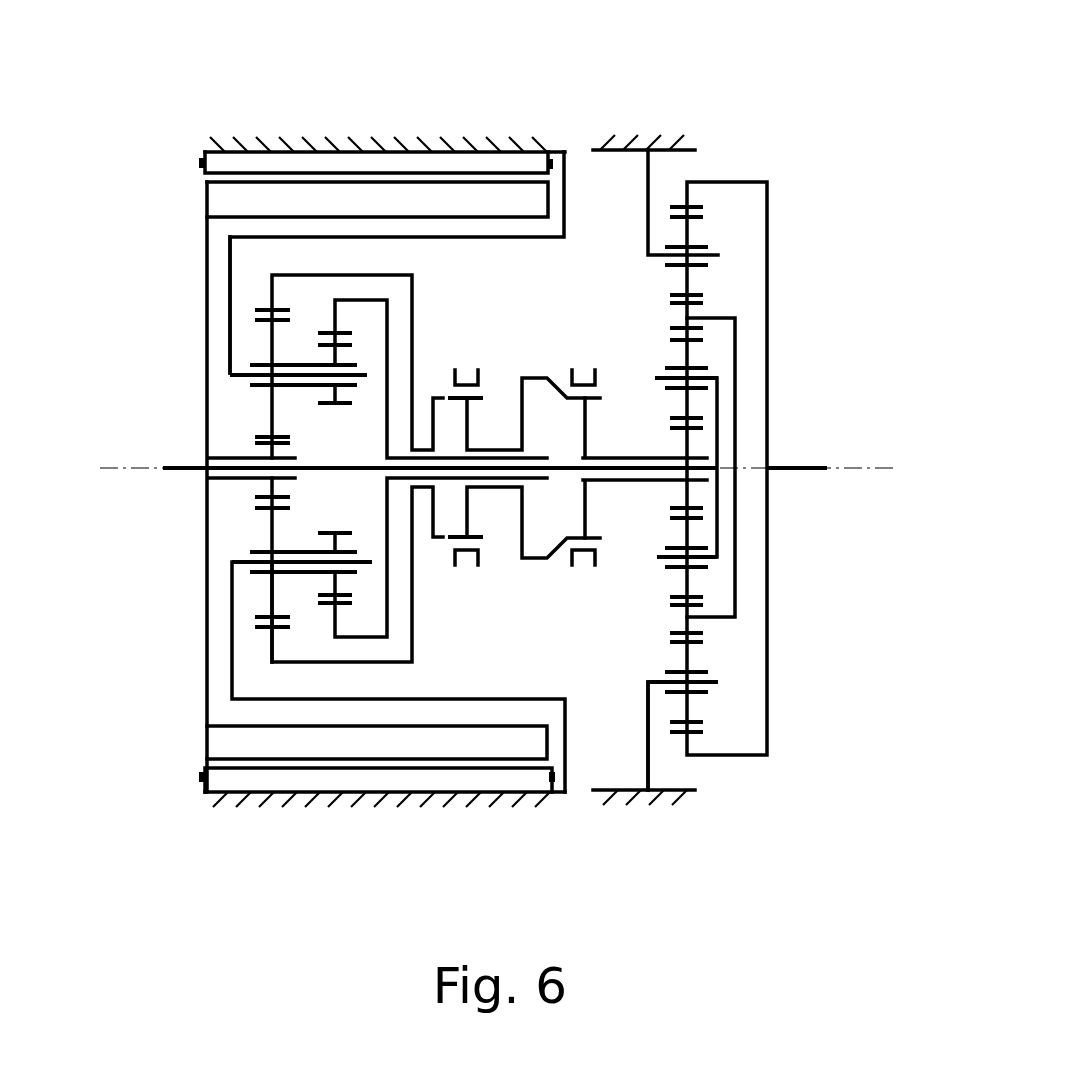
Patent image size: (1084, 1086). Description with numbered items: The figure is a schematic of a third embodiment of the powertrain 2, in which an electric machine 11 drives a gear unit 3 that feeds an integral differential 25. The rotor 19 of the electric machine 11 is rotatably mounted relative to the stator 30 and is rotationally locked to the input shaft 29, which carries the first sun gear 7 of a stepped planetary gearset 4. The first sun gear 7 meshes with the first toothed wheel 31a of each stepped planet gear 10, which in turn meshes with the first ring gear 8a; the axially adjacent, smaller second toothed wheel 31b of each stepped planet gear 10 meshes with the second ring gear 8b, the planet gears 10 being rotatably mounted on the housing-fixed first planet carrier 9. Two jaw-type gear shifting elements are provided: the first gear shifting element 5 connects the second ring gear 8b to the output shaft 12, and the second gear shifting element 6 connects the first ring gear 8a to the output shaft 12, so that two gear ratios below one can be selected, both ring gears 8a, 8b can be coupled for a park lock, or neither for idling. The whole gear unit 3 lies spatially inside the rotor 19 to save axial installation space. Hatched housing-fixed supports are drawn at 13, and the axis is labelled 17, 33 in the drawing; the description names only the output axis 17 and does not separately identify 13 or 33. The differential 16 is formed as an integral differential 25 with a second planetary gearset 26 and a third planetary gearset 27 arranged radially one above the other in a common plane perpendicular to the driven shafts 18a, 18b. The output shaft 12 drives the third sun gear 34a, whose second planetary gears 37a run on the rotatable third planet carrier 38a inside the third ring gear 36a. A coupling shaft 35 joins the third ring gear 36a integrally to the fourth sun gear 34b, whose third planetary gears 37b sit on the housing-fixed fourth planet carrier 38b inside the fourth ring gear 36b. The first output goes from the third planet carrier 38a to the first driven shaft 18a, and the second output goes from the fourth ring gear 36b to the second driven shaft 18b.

The powertrain 2 is at (334, 438).
The gear unit 3 is at (250, 683).
The stepped planetary gearset 4 is at (310, 647).
The first gear shifting element 5 is at (563, 572).
The second gear shifting element 6 is at (450, 572).
The first sun gear 7 is at (252, 443).
The first ring gear 8a is at (262, 630).
The second ring gear 8b is at (323, 605).
The first planet carrier 9 is at (230, 375).
The stepped planet gears 10 is at (302, 365).
The electric machine 11 is at (203, 792).
The output shaft 12 is at (637, 458).
The housing-fixed component 13 is at (243, 140).
The differential 16 is at (714, 412).
The integral differential 25 is at (702, 170).
The output axis 17 is at (474, 508).
The output shaft 33 is at (160, 474).
The first driven shaft 18a is at (182, 467).
The second driven shaft 18b is at (795, 470).
The rotor 19 is at (243, 191).
The second planetary gearset 26 is at (653, 587).
The third planetary gearset 27 is at (710, 212).
The input shaft 29 is at (243, 482).
The stator 30 is at (240, 163).
The first toothed wheel 31a is at (257, 333).
The second toothed wheel 31b is at (327, 347).
The third sun gear 34a is at (703, 430).
The fourth sun gear 34b is at (703, 305).
The coupling shaft 35 is at (737, 605).
The third ring gear 36a is at (703, 331).
The fourth ring gear 36b is at (673, 735).
The second planetary gears 37a is at (690, 350).
The third planetary gears 37b is at (690, 713).
The third planet carrier 38a is at (703, 398).
The fourth planet carrier 38b is at (717, 680).